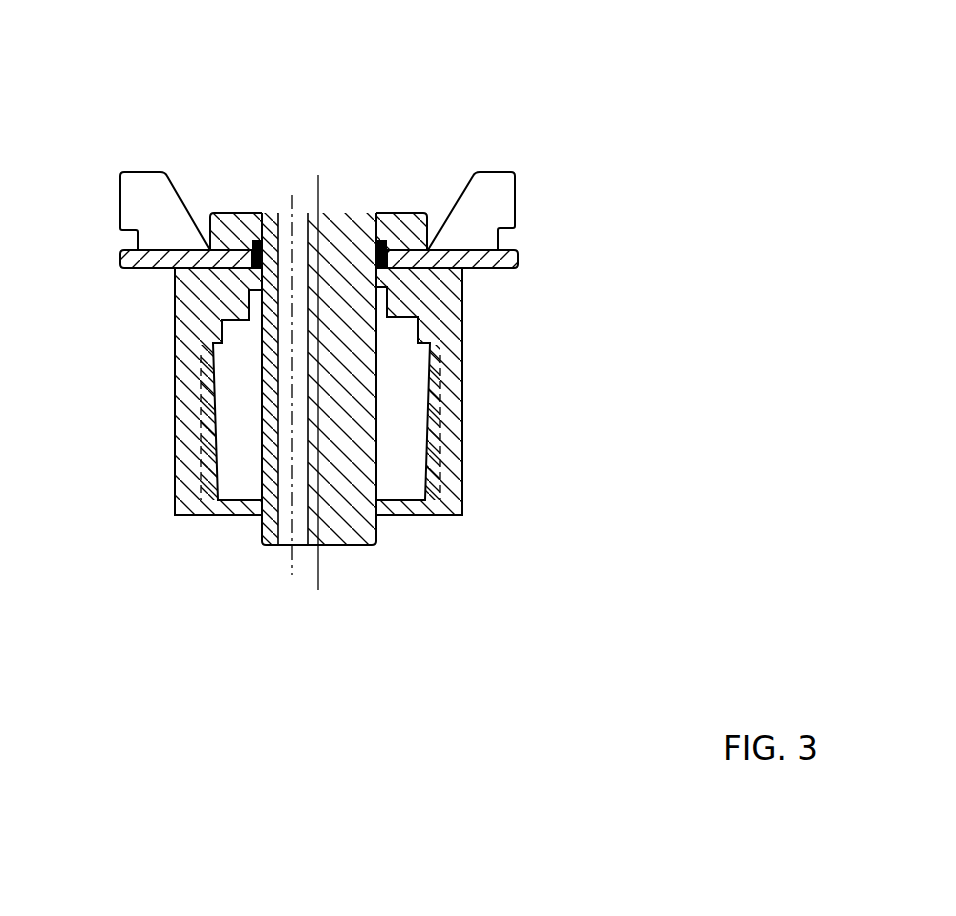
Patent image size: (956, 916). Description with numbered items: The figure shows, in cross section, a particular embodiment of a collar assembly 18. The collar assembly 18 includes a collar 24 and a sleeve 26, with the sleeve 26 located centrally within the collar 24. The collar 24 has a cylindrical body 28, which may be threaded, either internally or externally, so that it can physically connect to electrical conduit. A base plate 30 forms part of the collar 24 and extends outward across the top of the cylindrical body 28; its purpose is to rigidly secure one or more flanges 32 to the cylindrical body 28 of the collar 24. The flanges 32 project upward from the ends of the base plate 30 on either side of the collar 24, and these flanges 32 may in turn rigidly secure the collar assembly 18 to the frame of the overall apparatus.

The collar assembly 18 is at (677, 127).
The collar 24 is at (453, 410).
The sleeve 26 is at (360, 543).
The cylindrical body 28 is at (180, 500).
The base plate 30 is at (127, 267).
The flange 32 is at (147, 188).